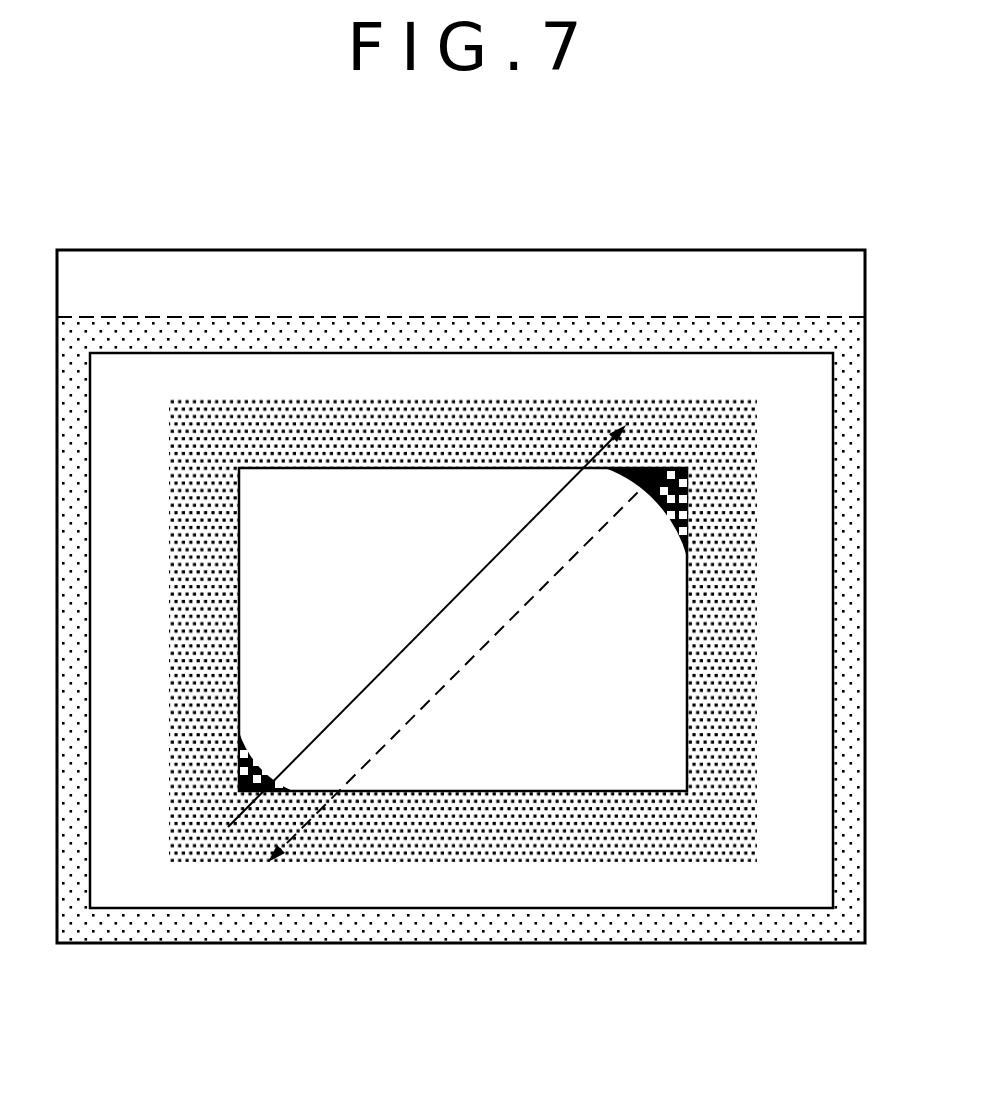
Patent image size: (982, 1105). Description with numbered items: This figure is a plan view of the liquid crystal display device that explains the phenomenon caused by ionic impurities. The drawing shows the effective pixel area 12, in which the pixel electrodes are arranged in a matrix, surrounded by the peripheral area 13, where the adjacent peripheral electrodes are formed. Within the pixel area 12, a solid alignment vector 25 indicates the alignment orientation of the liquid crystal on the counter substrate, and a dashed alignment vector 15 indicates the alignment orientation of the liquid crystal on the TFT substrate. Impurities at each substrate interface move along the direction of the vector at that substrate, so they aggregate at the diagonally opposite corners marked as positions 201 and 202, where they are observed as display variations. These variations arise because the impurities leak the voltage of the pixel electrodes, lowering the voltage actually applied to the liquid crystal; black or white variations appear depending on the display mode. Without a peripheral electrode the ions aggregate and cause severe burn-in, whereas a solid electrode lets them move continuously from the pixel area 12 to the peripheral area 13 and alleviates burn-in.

The effective pixel area 12 is at (636, 762).
The peripheral area 13 is at (715, 828).
The alignment vector 15 is at (454, 676).
The alignment vector 25 is at (427, 626).
The display variation position 201 is at (259, 793).
The display variation position 202 is at (666, 465).